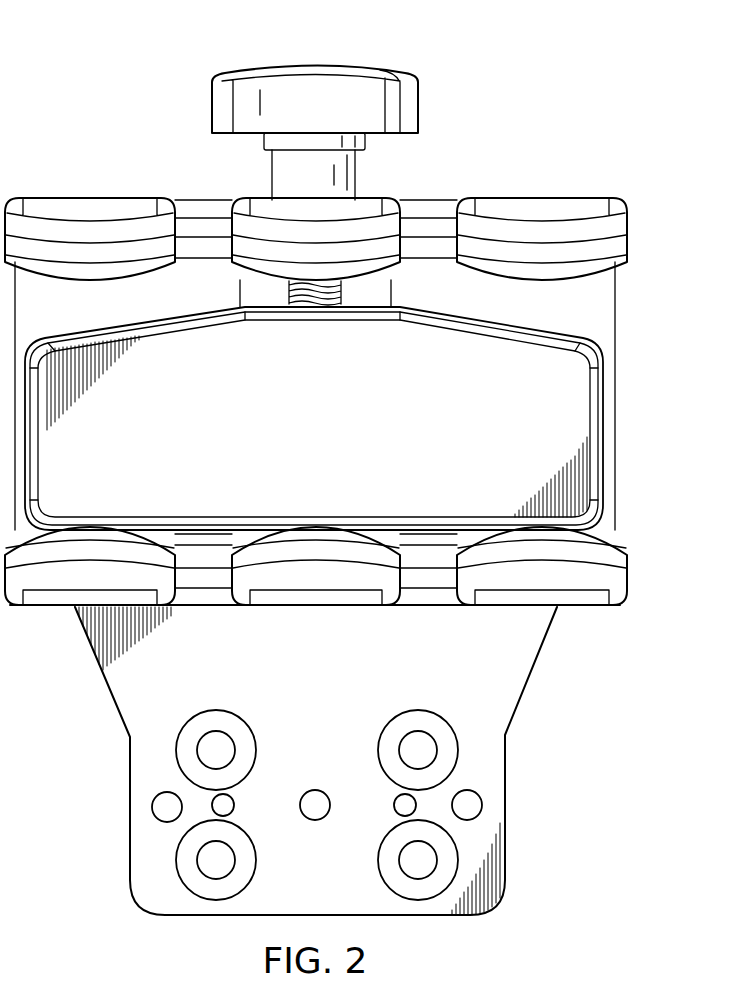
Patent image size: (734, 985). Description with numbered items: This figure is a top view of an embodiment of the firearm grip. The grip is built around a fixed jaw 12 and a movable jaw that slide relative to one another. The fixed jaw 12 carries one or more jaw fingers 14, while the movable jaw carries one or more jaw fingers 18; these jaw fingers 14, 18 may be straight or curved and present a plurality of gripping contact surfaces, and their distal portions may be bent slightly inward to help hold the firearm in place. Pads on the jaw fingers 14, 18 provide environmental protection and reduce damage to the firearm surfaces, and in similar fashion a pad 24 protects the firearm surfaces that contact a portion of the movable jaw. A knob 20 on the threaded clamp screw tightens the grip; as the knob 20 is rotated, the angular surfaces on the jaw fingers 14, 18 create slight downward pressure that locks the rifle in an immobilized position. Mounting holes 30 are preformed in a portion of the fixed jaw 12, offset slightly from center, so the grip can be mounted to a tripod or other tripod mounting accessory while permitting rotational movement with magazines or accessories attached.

The fixed jaw 12 is at (520, 685).
The jaw fingers 14 is at (540, 200).
The jaw fingers 18 is at (580, 603).
The knob 20 is at (312, 62).
The pad 24 is at (580, 440).
The mounting holes 30 is at (212, 745).